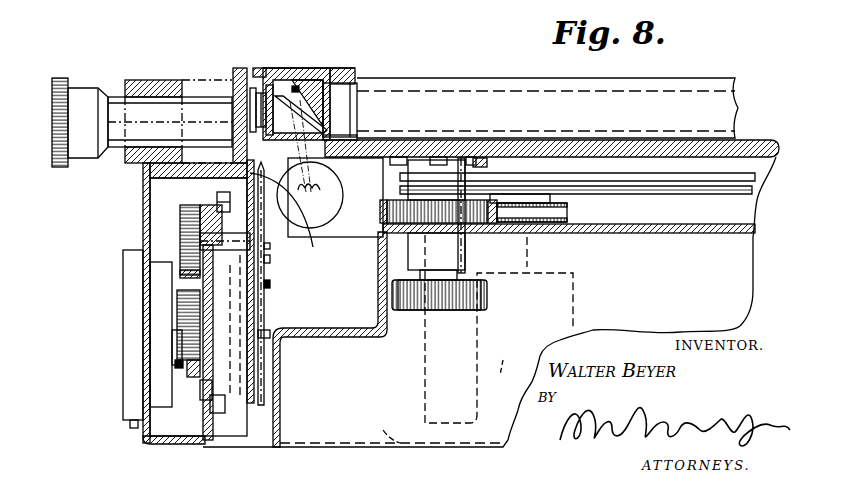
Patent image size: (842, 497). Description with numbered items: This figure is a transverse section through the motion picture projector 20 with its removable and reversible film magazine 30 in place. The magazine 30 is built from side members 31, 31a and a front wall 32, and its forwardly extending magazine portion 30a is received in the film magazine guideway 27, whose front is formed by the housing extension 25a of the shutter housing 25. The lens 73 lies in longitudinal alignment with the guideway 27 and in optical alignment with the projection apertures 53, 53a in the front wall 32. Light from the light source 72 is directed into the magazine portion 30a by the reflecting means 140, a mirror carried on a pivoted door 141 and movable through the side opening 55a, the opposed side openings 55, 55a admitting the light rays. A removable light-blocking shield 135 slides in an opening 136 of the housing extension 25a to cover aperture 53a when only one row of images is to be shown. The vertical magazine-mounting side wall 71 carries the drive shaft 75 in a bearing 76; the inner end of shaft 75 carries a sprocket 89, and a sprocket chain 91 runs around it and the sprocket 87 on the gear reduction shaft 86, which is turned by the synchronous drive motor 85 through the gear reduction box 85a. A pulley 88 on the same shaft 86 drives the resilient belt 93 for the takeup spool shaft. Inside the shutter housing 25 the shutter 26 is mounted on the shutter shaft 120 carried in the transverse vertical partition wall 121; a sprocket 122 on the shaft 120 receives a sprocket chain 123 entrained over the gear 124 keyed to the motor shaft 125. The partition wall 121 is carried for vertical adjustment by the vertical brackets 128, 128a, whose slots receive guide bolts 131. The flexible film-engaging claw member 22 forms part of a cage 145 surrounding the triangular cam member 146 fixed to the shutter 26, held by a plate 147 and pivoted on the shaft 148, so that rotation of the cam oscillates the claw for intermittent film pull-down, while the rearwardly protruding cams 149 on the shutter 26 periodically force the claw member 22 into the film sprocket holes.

The motion picture projector 20 is at (754, 256).
The film-engaging claw member 22 is at (268, 128).
The shutter housing 25 is at (145, 198).
The housing extension 25a is at (346, 68).
The shutter 26 is at (250, 190).
The film magazine guideway 27 is at (752, 140).
The film magazine 30 is at (481, 76).
The forward magazine portion 30a is at (360, 80).
The side member 31 is at (640, 131).
The side member 31a is at (690, 90).
The front wall 32 is at (291, 78).
The projection aperture 53 is at (262, 125).
The projection aperture 53a is at (256, 100).
The side opening 55 is at (330, 148).
The side opening 55a is at (343, 70).
The magazine-mounting side wall 71 is at (762, 148).
The light source 72 is at (330, 208).
The lens 73 is at (85, 97).
The drive shaft 75 is at (430, 263).
The bearing 76 is at (484, 162).
The synchronous drive motor 85 is at (420, 442).
The gear reduction box 85a is at (498, 377).
The gear reduction shaft 86 is at (535, 258).
The sprocket 87 is at (568, 199).
The pulley 88 is at (555, 178).
The sprocket 89 is at (395, 203).
The sprocket chain 91 is at (553, 215).
The resilient belt 93 is at (698, 182).
The shutter shaft 120 is at (185, 228).
The transverse vertical partition wall 121 is at (212, 275).
The sprocket 122 is at (182, 232).
The sprocket chain 123 is at (190, 320).
The gear 124 is at (180, 343).
The motor shaft 125 is at (175, 363).
The vertical bracket 128 is at (148, 195).
The vertical bracket 128a is at (212, 402).
The guide bolt 131 is at (197, 393).
The light-blocking shield 135 is at (258, 68).
The opening 136 is at (247, 70).
The reflecting means 140 is at (298, 86).
The door 141 is at (294, 90).
The cage 145 is at (270, 283).
The triangular cam member 146 is at (270, 258).
The plate 147 is at (270, 248).
The shaft 148 is at (272, 337).
The cams 149 is at (296, 214).